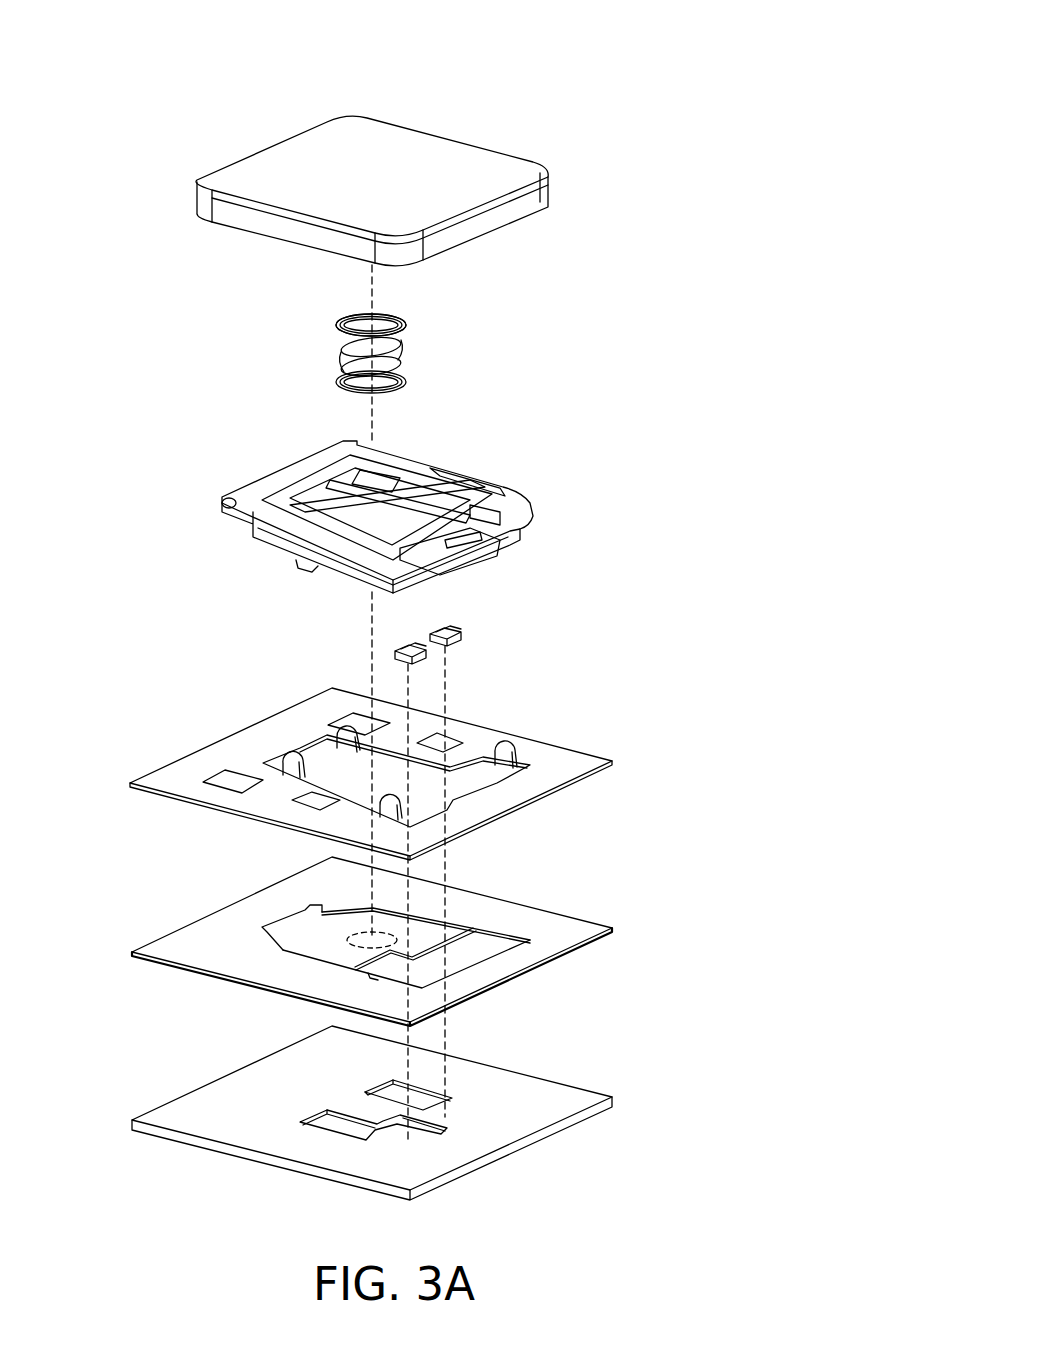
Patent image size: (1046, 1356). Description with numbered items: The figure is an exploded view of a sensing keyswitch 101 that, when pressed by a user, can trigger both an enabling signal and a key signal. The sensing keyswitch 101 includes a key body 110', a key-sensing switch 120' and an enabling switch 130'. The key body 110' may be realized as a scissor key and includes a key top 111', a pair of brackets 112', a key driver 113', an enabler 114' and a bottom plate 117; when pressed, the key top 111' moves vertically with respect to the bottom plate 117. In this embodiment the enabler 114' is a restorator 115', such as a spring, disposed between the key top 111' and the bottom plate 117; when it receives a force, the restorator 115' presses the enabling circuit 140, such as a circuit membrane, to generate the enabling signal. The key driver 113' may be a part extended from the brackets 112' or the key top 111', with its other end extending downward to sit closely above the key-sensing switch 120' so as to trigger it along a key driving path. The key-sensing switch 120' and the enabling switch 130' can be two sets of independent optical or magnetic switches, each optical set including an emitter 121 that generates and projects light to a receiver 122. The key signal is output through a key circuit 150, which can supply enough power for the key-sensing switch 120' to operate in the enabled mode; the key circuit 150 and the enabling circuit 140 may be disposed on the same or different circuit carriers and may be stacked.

The sensing keyswitch 101 is at (789, 31).
The key body 110' is at (701, 383).
The key top 111' is at (433, 191).
The pair of brackets 112' is at (446, 484).
The key driver 113' is at (535, 524).
The enabler 114' is at (505, 330).
The restorator 115' is at (371, 325).
The bottom plate 117 is at (533, 750).
The key-sensing switch 120' is at (316, 637).
The emitter 121 is at (437, 630).
The receiver 122 is at (400, 653).
The enabling switch 130' is at (406, 922).
The enabling circuit 140 is at (360, 941).
The key circuit 150 is at (525, 1098).